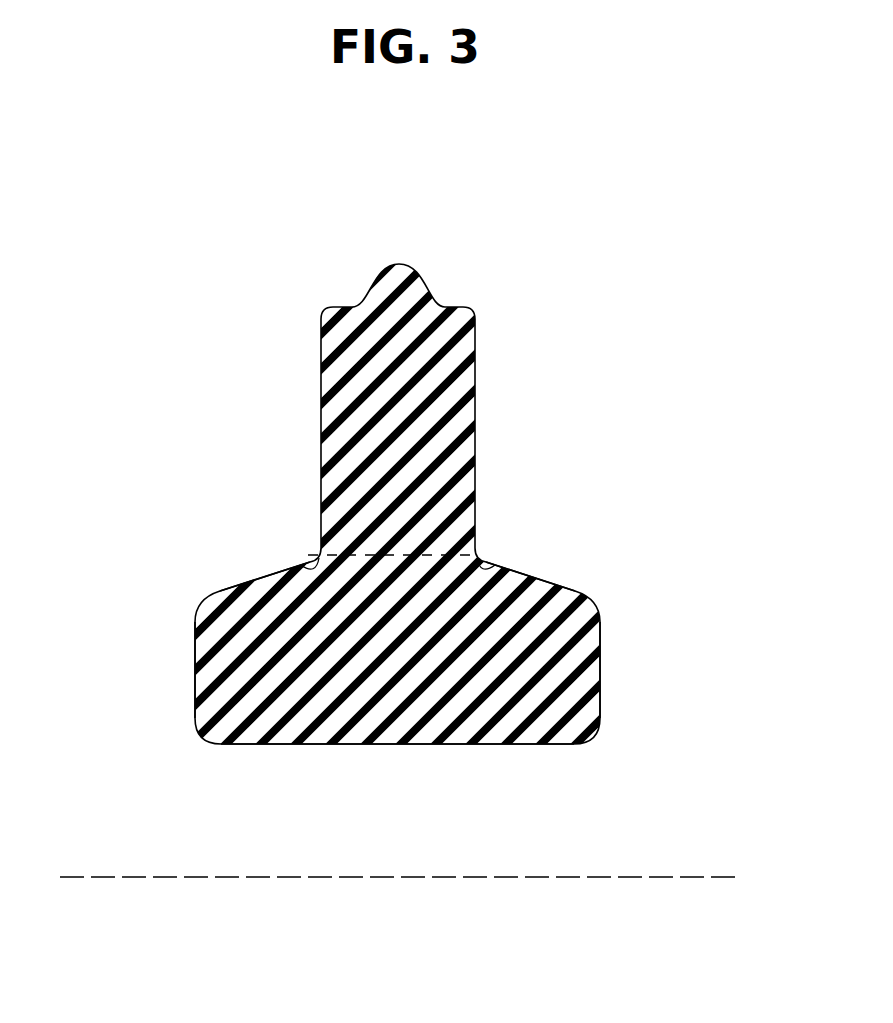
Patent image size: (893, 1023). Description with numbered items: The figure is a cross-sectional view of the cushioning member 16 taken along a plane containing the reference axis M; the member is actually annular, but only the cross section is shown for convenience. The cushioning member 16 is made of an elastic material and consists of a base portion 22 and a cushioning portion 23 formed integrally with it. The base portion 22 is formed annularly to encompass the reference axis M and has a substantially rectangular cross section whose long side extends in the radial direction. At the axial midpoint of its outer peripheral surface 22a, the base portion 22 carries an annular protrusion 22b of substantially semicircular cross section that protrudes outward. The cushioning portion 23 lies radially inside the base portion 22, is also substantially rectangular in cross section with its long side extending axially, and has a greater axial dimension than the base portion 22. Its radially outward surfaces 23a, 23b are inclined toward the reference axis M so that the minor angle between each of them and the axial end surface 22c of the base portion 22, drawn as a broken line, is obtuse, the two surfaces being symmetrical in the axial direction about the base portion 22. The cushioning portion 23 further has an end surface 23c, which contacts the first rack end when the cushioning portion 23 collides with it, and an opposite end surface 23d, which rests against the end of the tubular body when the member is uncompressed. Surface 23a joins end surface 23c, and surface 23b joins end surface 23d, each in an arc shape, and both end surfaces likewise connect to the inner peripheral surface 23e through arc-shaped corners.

The cushioning member 16 is at (129, 296).
The base portion 22 is at (455, 394).
The outer peripheral surface 22a is at (447, 305).
The protrusion 22b is at (402, 278).
The axial end surface 22c is at (429, 556).
The cushioning portion 23 is at (410, 703).
The radially outward surface 23a is at (566, 586).
The radially outward surface 23b is at (292, 567).
The end surface 23c is at (601, 663).
The end surface 23d is at (195, 647).
The inner peripheral surface 23e is at (242, 747).
The reference axis M is at (683, 877).